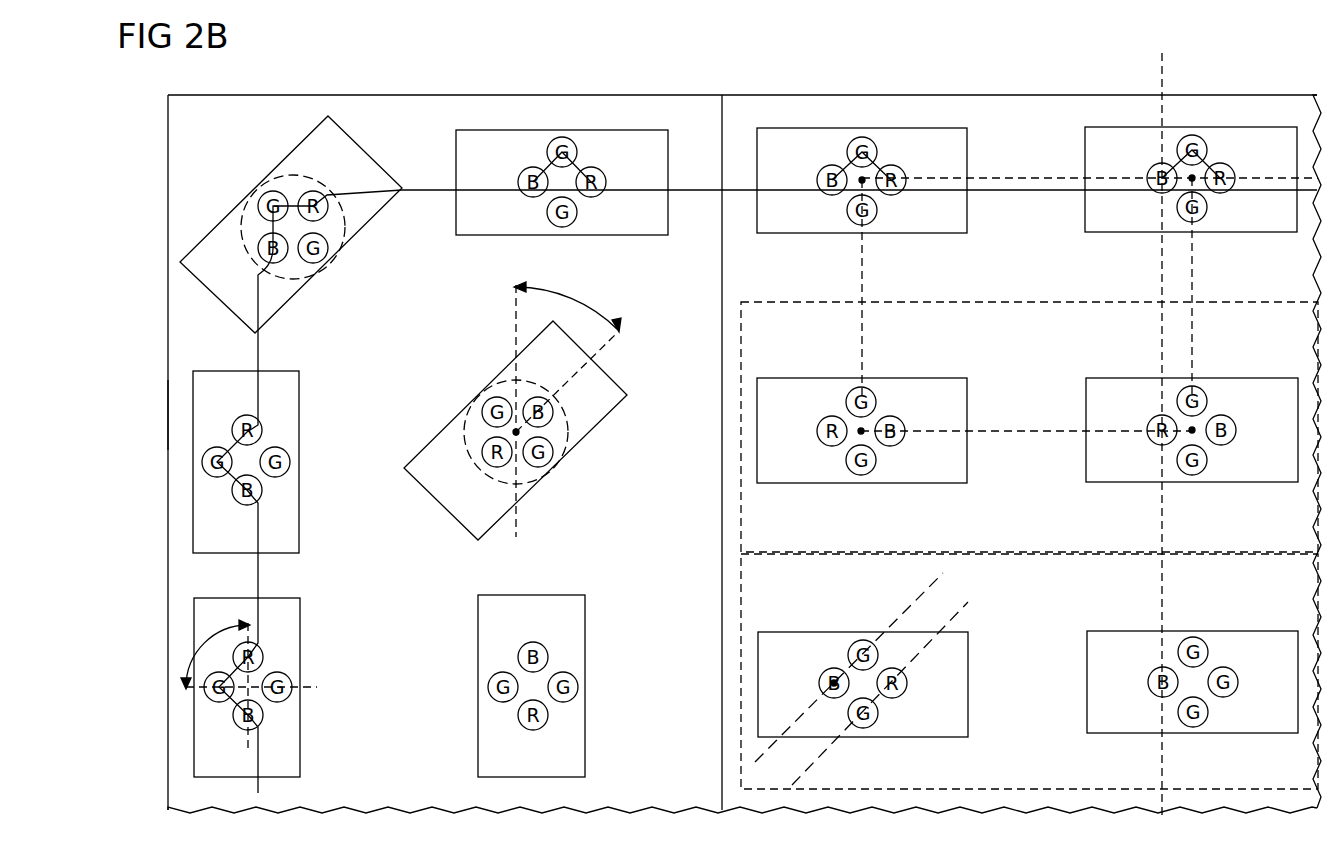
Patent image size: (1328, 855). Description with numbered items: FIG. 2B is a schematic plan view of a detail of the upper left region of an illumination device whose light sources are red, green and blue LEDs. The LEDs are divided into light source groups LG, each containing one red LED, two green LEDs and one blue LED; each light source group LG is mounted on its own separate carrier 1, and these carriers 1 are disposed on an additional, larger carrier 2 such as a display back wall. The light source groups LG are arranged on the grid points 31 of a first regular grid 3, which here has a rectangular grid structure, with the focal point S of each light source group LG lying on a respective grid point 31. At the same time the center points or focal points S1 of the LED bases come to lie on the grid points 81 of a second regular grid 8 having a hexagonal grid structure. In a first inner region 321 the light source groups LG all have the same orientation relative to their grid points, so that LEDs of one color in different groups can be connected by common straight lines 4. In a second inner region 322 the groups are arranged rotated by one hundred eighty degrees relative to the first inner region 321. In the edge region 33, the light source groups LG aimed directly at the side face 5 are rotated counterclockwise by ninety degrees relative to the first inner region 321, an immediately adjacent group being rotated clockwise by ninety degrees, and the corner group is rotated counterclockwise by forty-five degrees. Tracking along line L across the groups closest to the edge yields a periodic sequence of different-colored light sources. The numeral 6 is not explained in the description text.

The carrier 1 is at (362, 163).
The additional carrier 2 is at (176, 308).
The first regular grid 3 is at (1020, 178).
The common straight lines 4 is at (1162, 78).
The side face 5 is at (170, 408).
The display area 6 is at (168, 95).
The second regular grid 8 is at (820, 750).
The grid points 31 is at (870, 172).
The edge region 33 is at (437, 110).
The grid points 81 is at (830, 684).
The first inner region 321 is at (763, 345).
The second inner region 322 is at (765, 592).
The line L is at (258, 565).
The light source group LG is at (345, 222).
The focal point S is at (522, 436).
The center point of LED base S1 is at (831, 663).